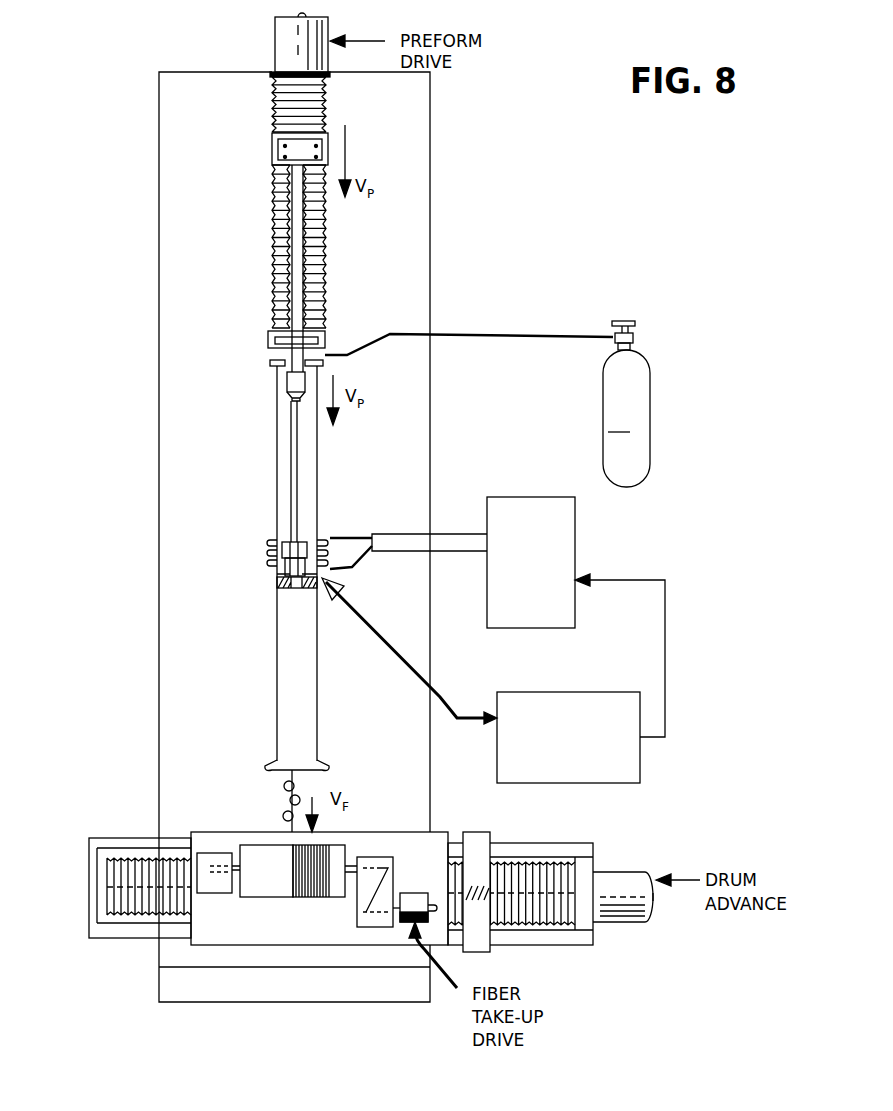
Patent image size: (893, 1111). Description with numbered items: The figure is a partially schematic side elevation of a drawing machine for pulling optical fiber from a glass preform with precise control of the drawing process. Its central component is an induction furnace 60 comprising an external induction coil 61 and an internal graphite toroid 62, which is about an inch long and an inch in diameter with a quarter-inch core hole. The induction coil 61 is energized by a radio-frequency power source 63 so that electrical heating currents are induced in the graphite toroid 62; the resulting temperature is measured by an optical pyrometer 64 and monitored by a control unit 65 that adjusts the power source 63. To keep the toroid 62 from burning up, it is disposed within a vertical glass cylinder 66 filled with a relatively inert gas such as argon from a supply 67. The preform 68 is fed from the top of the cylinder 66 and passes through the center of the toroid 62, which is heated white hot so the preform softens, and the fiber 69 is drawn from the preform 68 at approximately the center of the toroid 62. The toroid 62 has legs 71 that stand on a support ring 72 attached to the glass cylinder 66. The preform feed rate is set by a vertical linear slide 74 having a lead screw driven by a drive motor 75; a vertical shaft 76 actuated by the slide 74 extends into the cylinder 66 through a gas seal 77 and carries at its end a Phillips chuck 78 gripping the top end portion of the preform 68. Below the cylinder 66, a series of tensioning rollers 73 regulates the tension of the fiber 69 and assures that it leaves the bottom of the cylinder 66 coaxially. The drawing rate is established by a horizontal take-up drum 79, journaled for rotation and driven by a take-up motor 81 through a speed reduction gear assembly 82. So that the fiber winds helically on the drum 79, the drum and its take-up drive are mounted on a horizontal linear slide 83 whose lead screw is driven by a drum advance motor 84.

The induction furnace 60 is at (250, 516).
The external induction coil 61 is at (265, 553).
The internal graphite toroid 62 is at (303, 542).
The radio-frequency power source 63 is at (507, 497).
The optical pyrometer 64 is at (335, 580).
The control unit 65 is at (640, 666).
The vertical glass cylinder 66 is at (317, 486).
The argon supply 67 is at (650, 405).
The preform 68 is at (297, 466).
The fiber 69 is at (300, 658).
The legs 71 is at (278, 574).
The support ring 72 is at (285, 592).
The tensioning rollers 73 is at (283, 787).
The vertical linear slide 74 is at (265, 161).
The drive motor 75 is at (275, 42).
The vertical shaft 76 is at (298, 265).
The gas seal 77 is at (278, 356).
The Phillips chuck 78 is at (290, 380).
The horizontal take-up drum 79 is at (268, 890).
The take-up motor 81 is at (418, 893).
The speed reduction gear assembly 82 is at (357, 918).
The horizontal linear slide 83 is at (502, 957).
The drum advance motor 84 is at (628, 923).